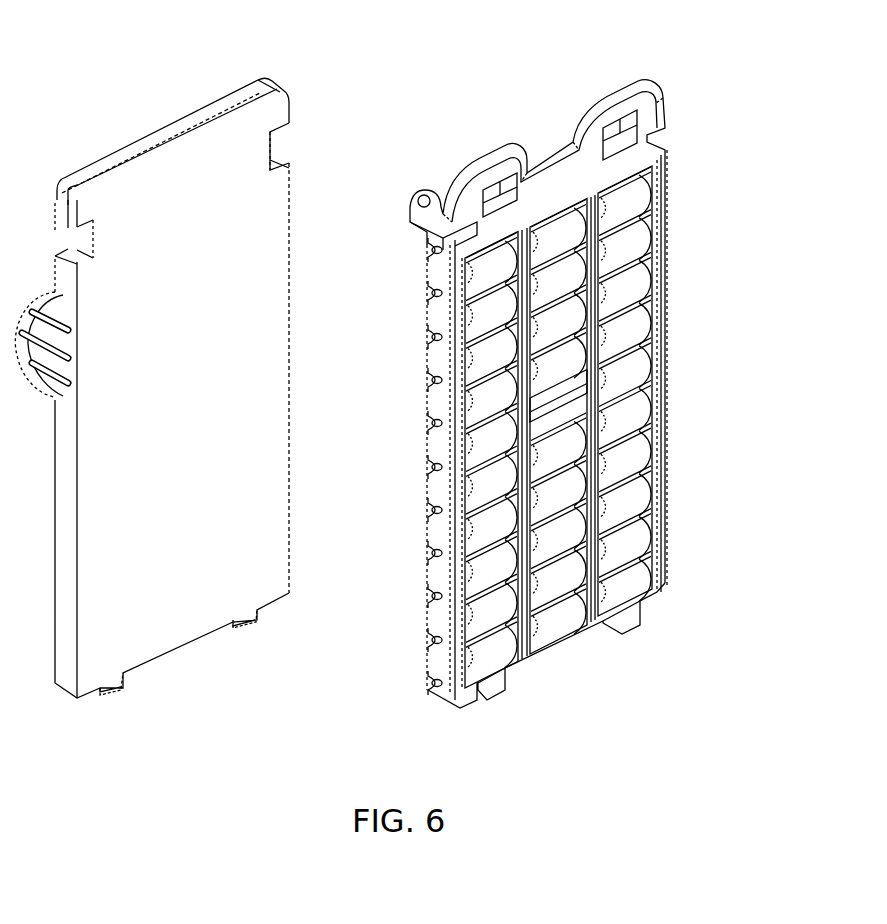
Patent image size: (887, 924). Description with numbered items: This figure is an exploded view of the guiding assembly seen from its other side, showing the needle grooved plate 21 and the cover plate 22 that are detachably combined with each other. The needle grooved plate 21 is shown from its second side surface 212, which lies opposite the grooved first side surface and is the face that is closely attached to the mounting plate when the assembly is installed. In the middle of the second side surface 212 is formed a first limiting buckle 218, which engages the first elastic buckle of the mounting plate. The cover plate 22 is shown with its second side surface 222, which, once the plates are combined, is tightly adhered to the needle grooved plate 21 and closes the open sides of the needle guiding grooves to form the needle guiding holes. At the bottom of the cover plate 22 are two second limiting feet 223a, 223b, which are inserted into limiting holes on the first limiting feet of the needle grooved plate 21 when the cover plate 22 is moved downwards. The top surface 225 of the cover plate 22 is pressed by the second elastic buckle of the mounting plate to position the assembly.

The needle grooved plate 21 is at (613, 76).
The cover plate 22 is at (195, 105).
The second side surface 212 is at (658, 373).
The first limiting buckle 218 is at (575, 417).
The second side surface 222 is at (250, 213).
The second limiting foot 223a is at (243, 620).
The second limiting foot 223b is at (123, 690).
The top surface 225 is at (120, 160).